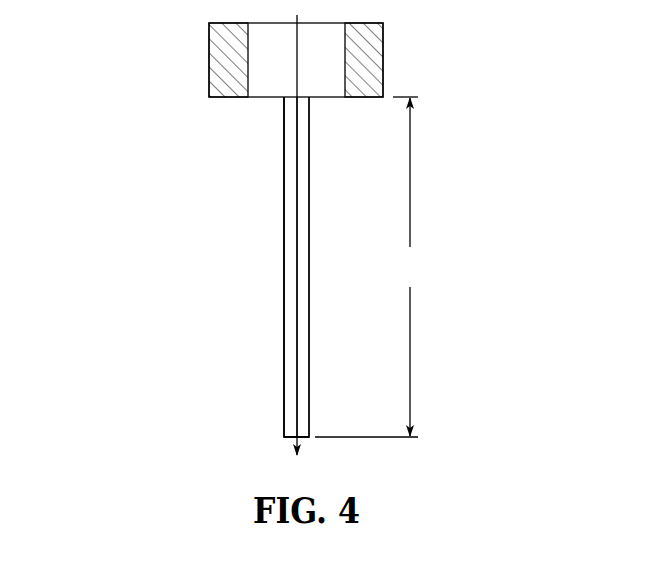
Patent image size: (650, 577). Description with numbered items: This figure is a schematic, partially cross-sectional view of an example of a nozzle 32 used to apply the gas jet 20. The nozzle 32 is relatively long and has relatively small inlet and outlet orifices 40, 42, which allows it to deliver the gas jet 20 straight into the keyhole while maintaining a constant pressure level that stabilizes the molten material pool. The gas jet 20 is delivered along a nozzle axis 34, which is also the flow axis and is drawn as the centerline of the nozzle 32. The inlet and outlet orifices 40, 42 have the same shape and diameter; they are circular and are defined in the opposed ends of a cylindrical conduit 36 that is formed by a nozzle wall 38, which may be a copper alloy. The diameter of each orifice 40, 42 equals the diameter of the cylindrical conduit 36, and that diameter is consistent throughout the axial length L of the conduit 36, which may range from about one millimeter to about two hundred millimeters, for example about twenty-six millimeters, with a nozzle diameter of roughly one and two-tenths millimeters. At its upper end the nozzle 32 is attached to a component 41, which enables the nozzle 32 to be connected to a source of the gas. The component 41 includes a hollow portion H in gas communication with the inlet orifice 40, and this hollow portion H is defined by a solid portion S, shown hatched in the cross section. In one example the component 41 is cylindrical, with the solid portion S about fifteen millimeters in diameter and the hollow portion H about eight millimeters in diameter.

The nozzle 32 is at (165, 163).
The component 41 is at (393, 63).
The solid portion S is at (232, 62).
The hollow portion H is at (331, 56).
The inlet orifice 40 is at (303, 97).
The gas jet 20 is at (284, 305).
The nozzle axis 34 is at (296, 267).
The cylindrical conduit 36 is at (284, 136).
The nozzle wall 38 is at (290, 195).
The outlet orifice 42 is at (303, 435).
The axial length L is at (366, 267).